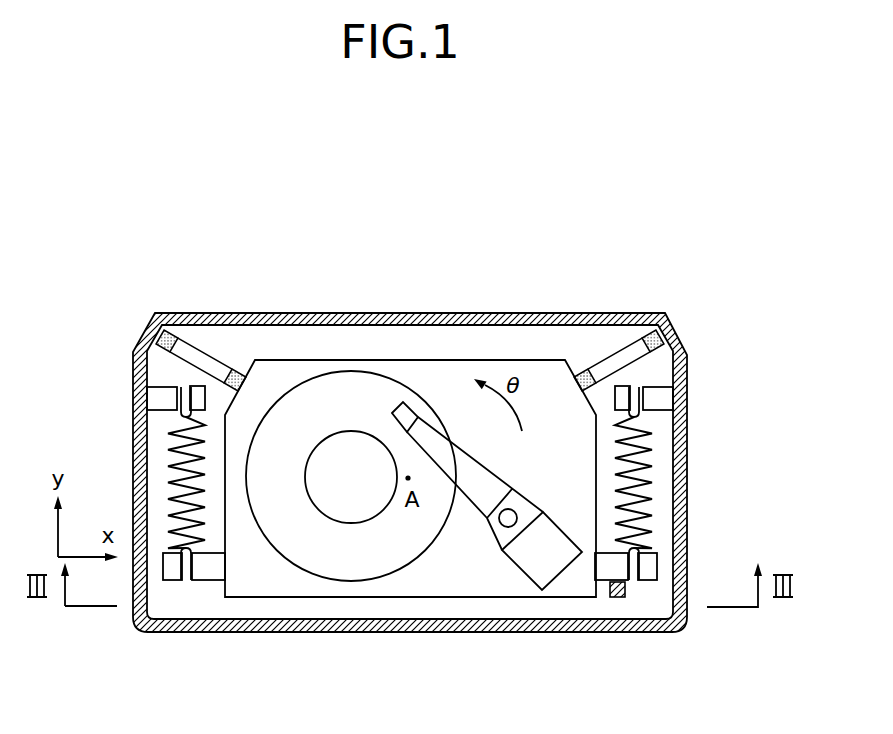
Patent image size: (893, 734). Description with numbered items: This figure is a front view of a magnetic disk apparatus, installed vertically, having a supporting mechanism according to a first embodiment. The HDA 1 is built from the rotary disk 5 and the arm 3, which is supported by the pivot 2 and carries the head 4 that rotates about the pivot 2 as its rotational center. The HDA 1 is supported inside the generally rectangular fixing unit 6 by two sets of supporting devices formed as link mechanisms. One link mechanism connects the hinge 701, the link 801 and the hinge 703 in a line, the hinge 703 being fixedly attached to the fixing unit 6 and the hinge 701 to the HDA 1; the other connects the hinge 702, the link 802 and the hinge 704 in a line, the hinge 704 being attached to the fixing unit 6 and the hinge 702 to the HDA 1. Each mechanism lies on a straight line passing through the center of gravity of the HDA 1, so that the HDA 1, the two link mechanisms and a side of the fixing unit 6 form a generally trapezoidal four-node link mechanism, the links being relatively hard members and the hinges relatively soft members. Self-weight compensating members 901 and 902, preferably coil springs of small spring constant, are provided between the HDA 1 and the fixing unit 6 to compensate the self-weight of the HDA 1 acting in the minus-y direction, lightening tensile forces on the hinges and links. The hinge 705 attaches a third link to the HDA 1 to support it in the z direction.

The HDA 1 is at (425, 578).
The pivot 2 is at (495, 523).
The arm 3 is at (483, 480).
The head 4 is at (404, 412).
The rotary disk 5 is at (345, 392).
The fixing unit 6 is at (297, 318).
The hinge 701 is at (233, 372).
The hinge 702 is at (589, 372).
The hinge 703 is at (160, 313).
The hinge 704 is at (658, 315).
The hinge 705 is at (620, 597).
The link 801 is at (208, 355).
The link 802 is at (614, 354).
The self-weight compensating member 901 is at (172, 443).
The self-weight compensating member 902 is at (652, 450).